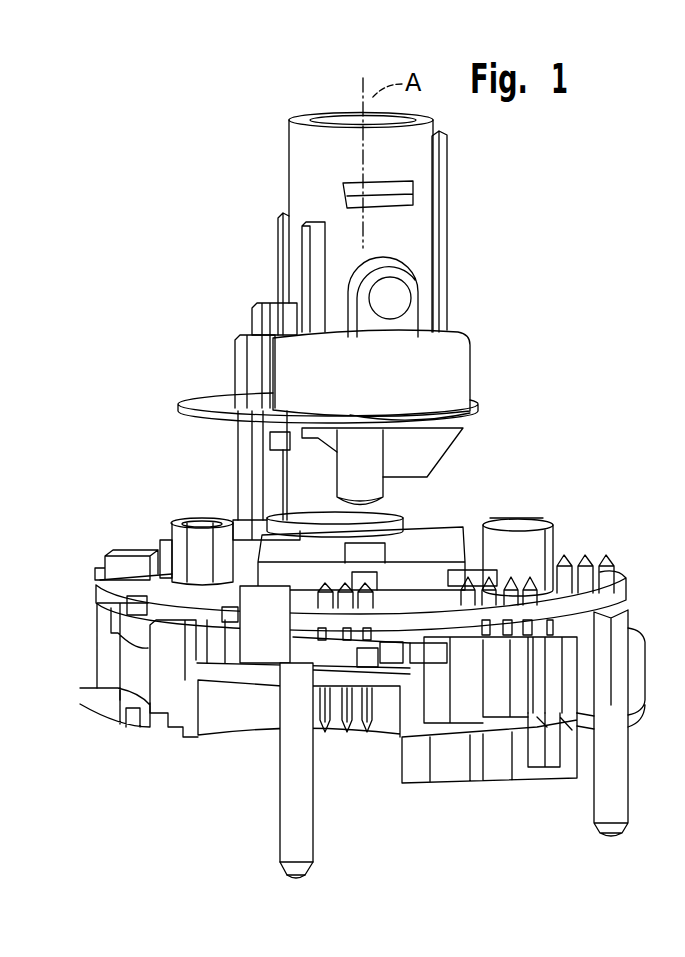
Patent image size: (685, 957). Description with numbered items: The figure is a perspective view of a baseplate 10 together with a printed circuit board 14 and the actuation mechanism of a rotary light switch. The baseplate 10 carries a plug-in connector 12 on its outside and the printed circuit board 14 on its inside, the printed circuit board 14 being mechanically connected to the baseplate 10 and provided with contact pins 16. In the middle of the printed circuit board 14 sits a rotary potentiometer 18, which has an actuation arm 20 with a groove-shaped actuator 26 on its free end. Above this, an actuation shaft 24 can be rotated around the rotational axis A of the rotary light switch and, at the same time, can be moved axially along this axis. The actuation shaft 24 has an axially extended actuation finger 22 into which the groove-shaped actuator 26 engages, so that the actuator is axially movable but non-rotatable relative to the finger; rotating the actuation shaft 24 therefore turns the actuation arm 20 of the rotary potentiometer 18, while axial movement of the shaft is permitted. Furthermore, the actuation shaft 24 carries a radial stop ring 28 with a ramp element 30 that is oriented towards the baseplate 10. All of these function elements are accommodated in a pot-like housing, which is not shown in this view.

The baseplate 10 is at (453, 735).
The plug-in connector 12 is at (345, 733).
The printed circuit board 14 is at (162, 580).
The contact pins 16 is at (528, 580).
The rotary potentiometer 18 is at (452, 547).
The actuation arm 20 is at (285, 532).
The actuation finger 22 is at (268, 318).
The actuation shaft 24 is at (434, 285).
The groove-shaped actuator 26 is at (252, 455).
The radial stop ring 28 is at (213, 398).
The ramp element 30 is at (433, 452).